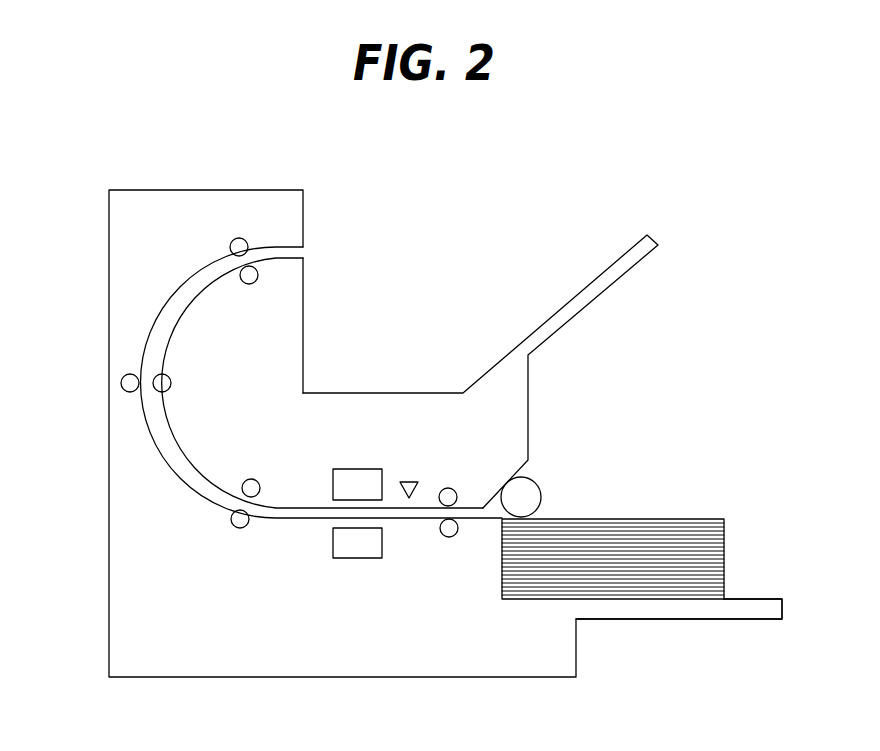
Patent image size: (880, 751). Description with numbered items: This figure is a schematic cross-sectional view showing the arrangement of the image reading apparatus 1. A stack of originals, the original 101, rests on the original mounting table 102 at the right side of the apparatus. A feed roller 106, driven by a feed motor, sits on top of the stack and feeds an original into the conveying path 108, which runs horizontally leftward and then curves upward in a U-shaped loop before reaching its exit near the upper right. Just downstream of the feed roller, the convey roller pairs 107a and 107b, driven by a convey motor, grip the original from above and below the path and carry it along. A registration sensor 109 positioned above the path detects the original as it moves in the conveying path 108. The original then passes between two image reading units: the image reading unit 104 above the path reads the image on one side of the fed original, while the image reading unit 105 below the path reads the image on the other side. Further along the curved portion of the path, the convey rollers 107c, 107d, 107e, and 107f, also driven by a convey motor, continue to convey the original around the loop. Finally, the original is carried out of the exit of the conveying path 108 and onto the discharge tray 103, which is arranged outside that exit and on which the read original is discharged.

The image reading apparatus 1 is at (683, 159).
The original 101 is at (685, 517).
The original mounting table 102 is at (757, 610).
The discharge tray 103 is at (445, 393).
The image reading unit 104 is at (353, 469).
The image reading unit 105 is at (358, 556).
The feed roller 106 is at (541, 489).
The convey roller pair 107a is at (250, 479).
The convey roller pair 107b is at (236, 528).
The convey roller 107c is at (171, 380).
The convey roller 107d is at (125, 375).
The convey roller 107e is at (258, 280).
The convey roller 107f is at (239, 238).
The conveying path 108 is at (185, 468).
The registration sensor 109 is at (409, 482).